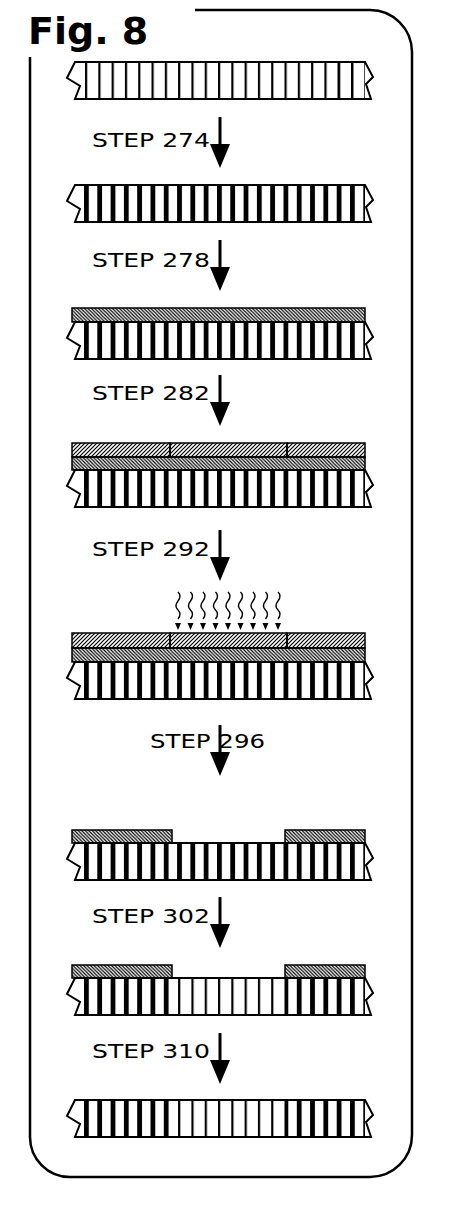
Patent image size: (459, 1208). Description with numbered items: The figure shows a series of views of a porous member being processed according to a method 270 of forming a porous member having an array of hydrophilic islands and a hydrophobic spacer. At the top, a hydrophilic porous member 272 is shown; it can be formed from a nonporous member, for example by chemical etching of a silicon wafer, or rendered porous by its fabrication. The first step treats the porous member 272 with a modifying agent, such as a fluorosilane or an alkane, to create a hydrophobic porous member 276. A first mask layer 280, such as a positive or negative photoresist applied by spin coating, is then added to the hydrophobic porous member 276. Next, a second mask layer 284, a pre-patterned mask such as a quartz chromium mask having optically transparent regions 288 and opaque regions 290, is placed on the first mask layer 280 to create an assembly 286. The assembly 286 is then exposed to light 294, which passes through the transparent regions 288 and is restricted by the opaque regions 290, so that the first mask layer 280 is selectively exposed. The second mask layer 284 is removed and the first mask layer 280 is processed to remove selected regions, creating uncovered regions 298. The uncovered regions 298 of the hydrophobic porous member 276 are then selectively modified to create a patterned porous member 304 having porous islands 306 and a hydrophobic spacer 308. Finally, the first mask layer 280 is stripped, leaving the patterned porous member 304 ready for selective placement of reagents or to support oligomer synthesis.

The method 270 is at (277, 53).
The hydrophilic porous member 272 is at (357, 89).
The hydrophobic porous member 276 is at (357, 210).
The first mask layer 280 is at (140, 312).
The second mask layer 284 is at (105, 436).
The assembly 286 is at (238, 568).
The optically transparent regions 288 is at (198, 447).
The opaque regions 290 is at (325, 447).
The light 294 is at (283, 600).
The uncovered regions 298 is at (248, 843).
The patterned porous member 304 is at (203, 1035).
The porous islands 306 is at (250, 988).
The hydrophobic spacer 308 is at (312, 1010).